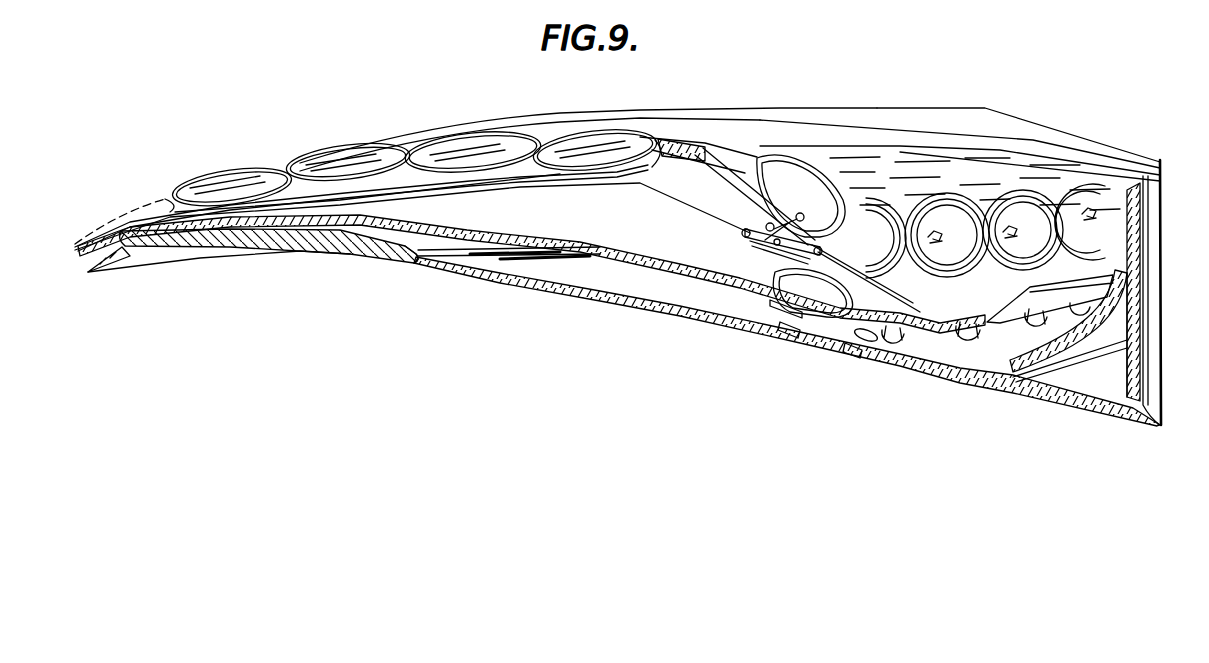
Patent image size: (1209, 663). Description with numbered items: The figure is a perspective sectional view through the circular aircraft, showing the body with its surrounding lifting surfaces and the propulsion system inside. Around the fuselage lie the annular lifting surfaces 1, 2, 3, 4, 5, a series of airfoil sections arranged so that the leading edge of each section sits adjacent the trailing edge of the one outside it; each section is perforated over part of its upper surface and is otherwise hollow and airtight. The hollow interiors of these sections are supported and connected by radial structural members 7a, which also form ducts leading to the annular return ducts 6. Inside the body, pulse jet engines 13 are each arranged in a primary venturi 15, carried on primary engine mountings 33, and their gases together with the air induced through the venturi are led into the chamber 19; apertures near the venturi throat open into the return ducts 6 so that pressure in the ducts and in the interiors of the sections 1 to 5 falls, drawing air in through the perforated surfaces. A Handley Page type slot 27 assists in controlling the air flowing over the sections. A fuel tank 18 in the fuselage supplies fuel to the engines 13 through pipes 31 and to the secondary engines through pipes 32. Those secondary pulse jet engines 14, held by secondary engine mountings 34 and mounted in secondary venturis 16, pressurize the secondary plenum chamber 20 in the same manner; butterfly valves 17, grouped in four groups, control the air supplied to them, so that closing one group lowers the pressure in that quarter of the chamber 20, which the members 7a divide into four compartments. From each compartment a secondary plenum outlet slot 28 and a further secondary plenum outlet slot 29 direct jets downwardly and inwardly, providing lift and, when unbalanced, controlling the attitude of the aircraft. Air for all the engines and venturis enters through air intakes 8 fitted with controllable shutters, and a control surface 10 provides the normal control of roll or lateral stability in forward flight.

The annular lifting surface 1 is at (136, 215).
The annular lifting surface 2 is at (236, 185).
The annular lifting surface 3 is at (353, 160).
The annular lifting surface 4 is at (475, 148).
The annular lifting surface 5 is at (606, 148).
The annular return duct 6 is at (792, 172).
The radial structural member 7a is at (1153, 355).
The air intake 8 is at (1062, 150).
The control surface for roll 10 is at (180, 254).
The pulse jet engine 13 is at (744, 233).
The pulse jet engine 14 is at (772, 305).
The primary venturi 15 is at (840, 256).
The secondary venturi 16 is at (967, 340).
The butterfly valve 17 is at (870, 338).
The fuel tank 18 is at (740, 158).
The chamber 19 is at (632, 236).
The secondary plenum chamber 20 is at (639, 291).
The Handley Page type slot 27 is at (673, 150).
The secondary plenum outlet slot 28 is at (410, 264).
The further secondary plenum outlet slot 29 is at (125, 250).
The pipe 31 is at (1023, 230).
The pipe 32 is at (853, 352).
The primary engine mounting 33 is at (800, 208).
The secondary engine mounting 34 is at (786, 328).